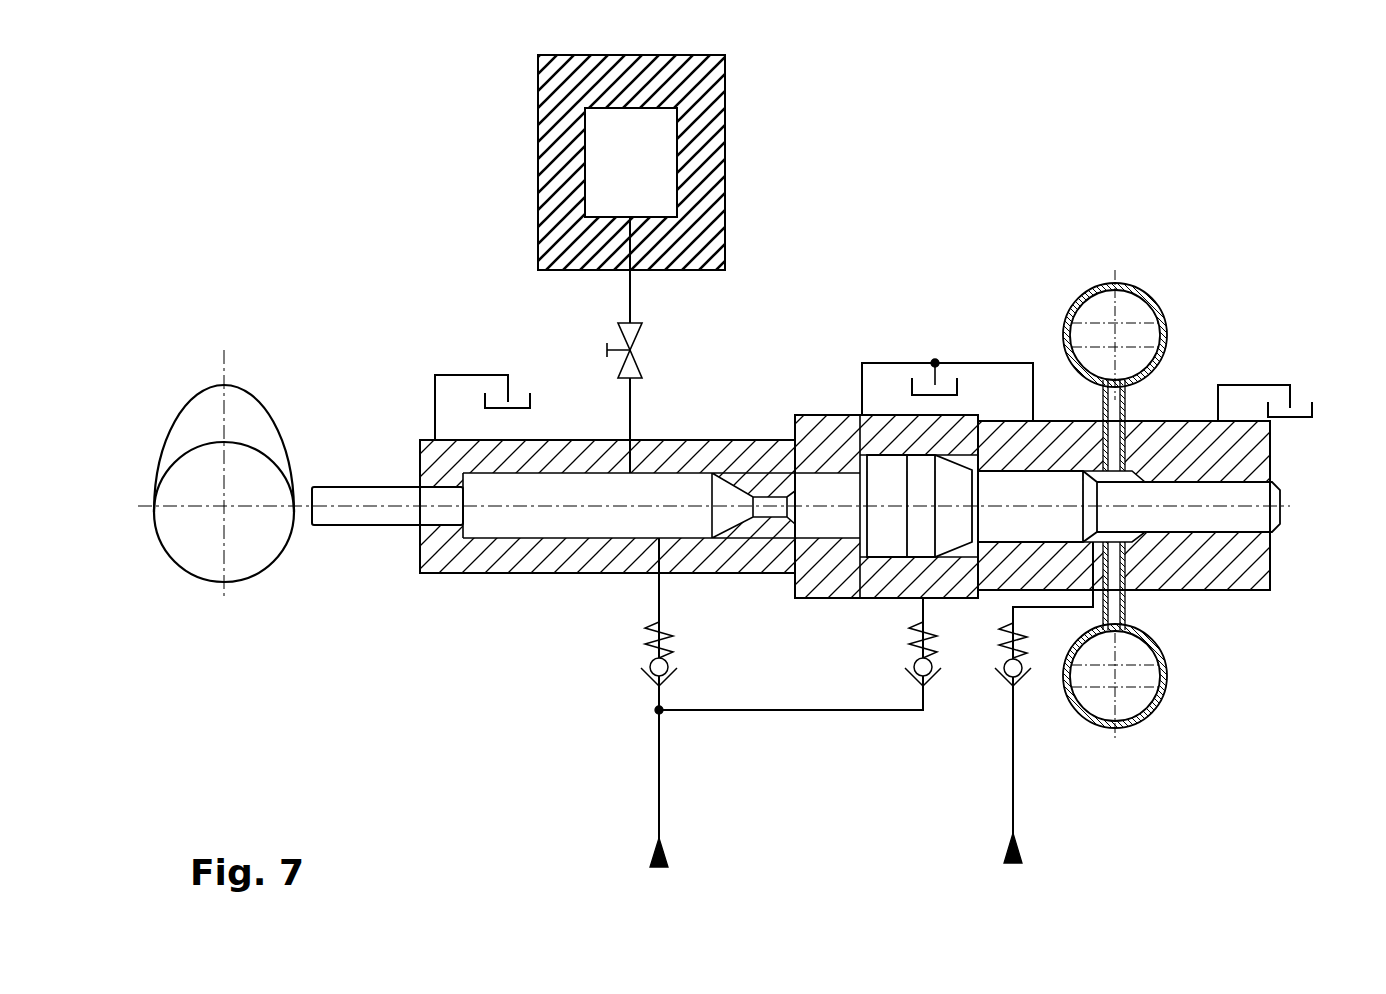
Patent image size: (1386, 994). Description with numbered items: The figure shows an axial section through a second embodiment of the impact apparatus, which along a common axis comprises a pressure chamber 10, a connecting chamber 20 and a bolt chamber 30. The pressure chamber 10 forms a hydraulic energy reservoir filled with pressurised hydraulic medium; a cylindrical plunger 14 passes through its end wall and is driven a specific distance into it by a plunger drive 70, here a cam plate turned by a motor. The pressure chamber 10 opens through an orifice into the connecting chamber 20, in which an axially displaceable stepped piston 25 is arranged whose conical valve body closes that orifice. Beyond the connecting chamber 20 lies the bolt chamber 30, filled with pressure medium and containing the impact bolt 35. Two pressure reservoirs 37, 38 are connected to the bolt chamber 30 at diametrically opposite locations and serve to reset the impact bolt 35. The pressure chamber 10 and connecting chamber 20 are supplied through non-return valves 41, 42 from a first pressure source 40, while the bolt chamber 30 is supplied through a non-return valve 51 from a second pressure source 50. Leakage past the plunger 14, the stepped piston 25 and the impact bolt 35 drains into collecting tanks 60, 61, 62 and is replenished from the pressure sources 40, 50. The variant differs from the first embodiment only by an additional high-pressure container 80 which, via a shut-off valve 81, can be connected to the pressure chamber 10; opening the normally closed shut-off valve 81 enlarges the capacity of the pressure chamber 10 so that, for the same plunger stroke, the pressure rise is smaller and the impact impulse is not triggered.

The pressure chamber 10 is at (551, 430).
The plunger 14 is at (383, 497).
The connecting chamber 20 is at (816, 405).
The stepped piston 25 is at (884, 460).
The bolt chamber 30 is at (1182, 410).
The impact bolt 35 is at (1198, 522).
The pressure reservoir 37 is at (1100, 298).
The pressure reservoir 38 is at (1148, 715).
The first pressure source 40 is at (650, 853).
The non-return valve 41 is at (655, 685).
The non-return valve 42 is at (925, 690).
The second pressure source 50 is at (1025, 855).
The non-return valve 51 is at (1015, 690).
The collecting tank 60 is at (517, 385).
The collecting tank 61 is at (933, 378).
The collecting tank 62 is at (1298, 408).
The plunger drive 70 is at (211, 420).
The high-pressure container 80 is at (725, 185).
The shut-off valve 81 is at (637, 338).